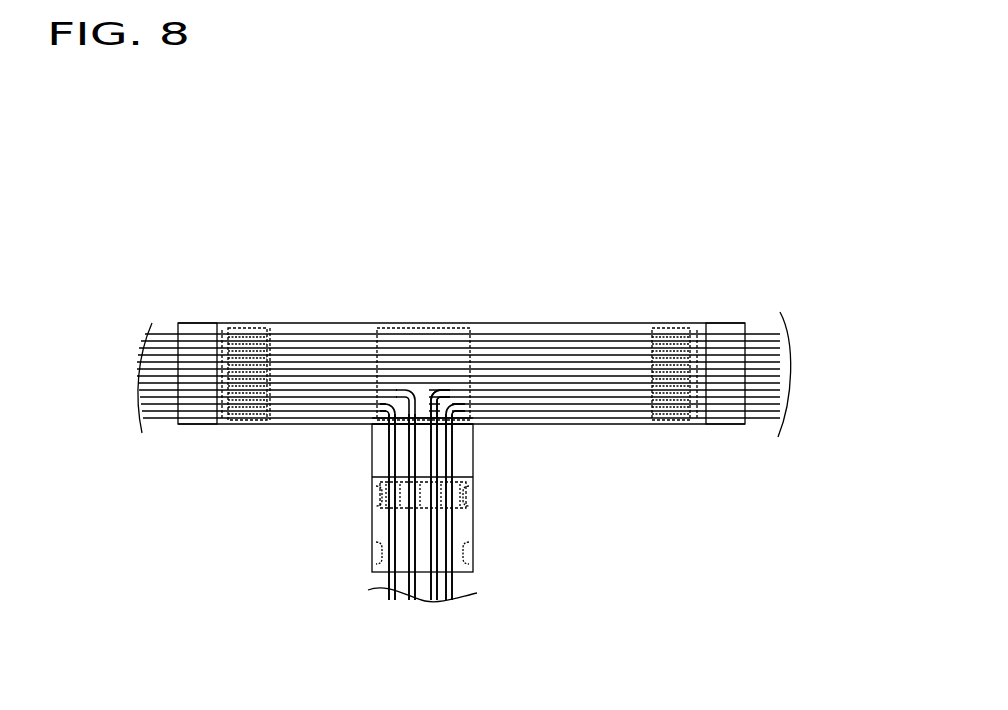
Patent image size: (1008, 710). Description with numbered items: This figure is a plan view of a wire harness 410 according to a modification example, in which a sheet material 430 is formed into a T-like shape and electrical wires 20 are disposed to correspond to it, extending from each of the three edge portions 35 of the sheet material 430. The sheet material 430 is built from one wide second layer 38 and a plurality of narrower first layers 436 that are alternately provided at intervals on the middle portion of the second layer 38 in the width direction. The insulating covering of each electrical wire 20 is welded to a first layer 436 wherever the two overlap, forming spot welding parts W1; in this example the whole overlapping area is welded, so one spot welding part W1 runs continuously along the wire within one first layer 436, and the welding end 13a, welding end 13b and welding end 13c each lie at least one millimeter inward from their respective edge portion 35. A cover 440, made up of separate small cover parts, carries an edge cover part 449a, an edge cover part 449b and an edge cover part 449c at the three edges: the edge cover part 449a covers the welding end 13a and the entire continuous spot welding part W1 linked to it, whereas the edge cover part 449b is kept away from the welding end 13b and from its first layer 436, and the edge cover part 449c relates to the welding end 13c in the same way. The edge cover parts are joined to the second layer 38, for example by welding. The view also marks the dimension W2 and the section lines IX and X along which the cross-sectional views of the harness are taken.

The wire harness 410 is at (145, 192).
The sheet material 430 is at (323, 253).
The first layer 436 is at (258, 322).
The second layer 38 is at (305, 322).
The edge portion 35 is at (172, 322).
The welding end 13b is at (232, 322).
The welding end 13c is at (686, 322).
The welding end 13a is at (458, 527).
The electrical wire 20 is at (543, 322).
The edge cover part 449a is at (473, 478).
The edge cover part 449b is at (226, 425).
The edge cover part 449c is at (690, 425).
The cover 440 is at (457, 403).
The spot welding part W1 is at (372, 322).
The second width W2 is at (729, 322).
The X-X line X is at (138, 345).
The IX-IX line IX is at (403, 322).